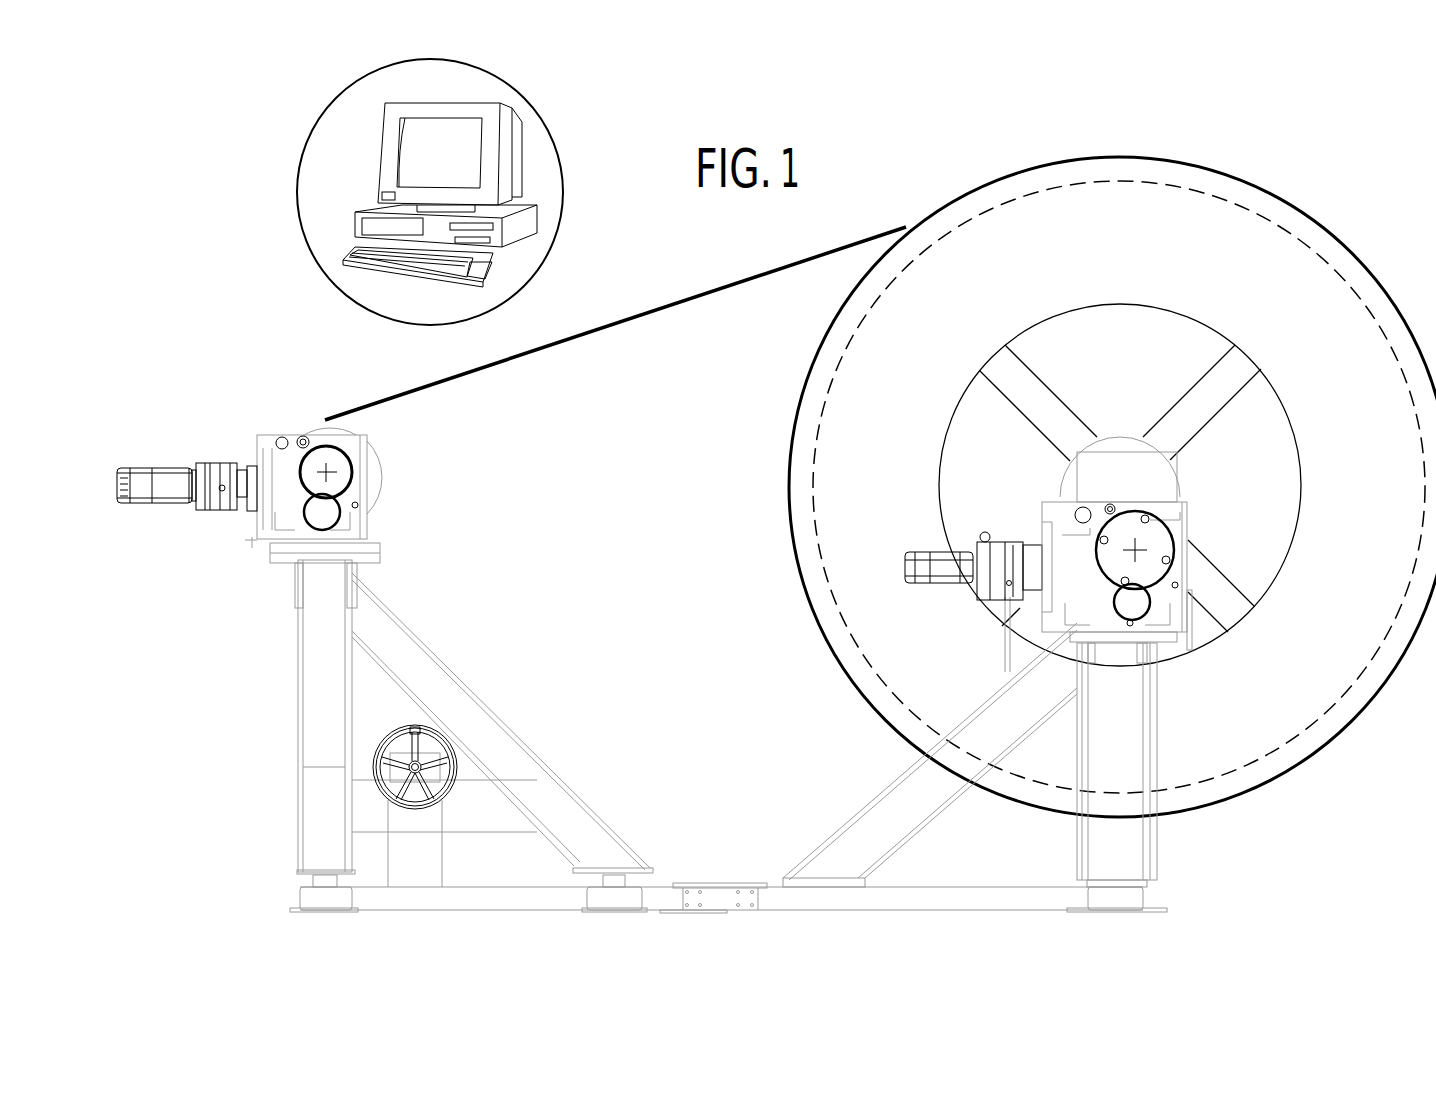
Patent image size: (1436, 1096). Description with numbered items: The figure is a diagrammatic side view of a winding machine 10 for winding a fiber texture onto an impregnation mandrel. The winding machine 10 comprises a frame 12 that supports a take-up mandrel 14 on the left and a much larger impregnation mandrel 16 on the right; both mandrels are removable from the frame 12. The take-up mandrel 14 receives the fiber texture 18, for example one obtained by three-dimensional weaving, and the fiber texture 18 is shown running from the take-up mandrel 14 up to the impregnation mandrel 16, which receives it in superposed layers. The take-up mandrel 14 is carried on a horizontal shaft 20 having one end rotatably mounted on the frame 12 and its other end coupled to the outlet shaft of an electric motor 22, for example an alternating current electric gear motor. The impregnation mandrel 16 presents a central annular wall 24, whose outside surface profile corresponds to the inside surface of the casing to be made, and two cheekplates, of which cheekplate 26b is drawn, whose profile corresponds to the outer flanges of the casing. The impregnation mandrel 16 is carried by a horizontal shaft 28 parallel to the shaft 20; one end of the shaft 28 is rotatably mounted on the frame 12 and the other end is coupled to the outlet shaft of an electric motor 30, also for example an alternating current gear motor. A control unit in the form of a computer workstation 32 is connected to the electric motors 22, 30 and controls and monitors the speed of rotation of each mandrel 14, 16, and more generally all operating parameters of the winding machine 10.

The winding machine 10 is at (909, 126).
The frame 12 is at (852, 788).
The take-up mandrel 14 is at (333, 452).
The impregnation mandrel 16 is at (1066, 487).
The fiber texture 18 is at (643, 312).
The horizontal shaft 20 is at (332, 472).
The electric motor 22 is at (238, 524).
The central annular wall 24 is at (812, 457).
The cheekplate 26b is at (807, 553).
The horizontal shaft 28 is at (1140, 550).
The electric motor 30 is at (1144, 576).
The computer workstation 32 is at (367, 126).